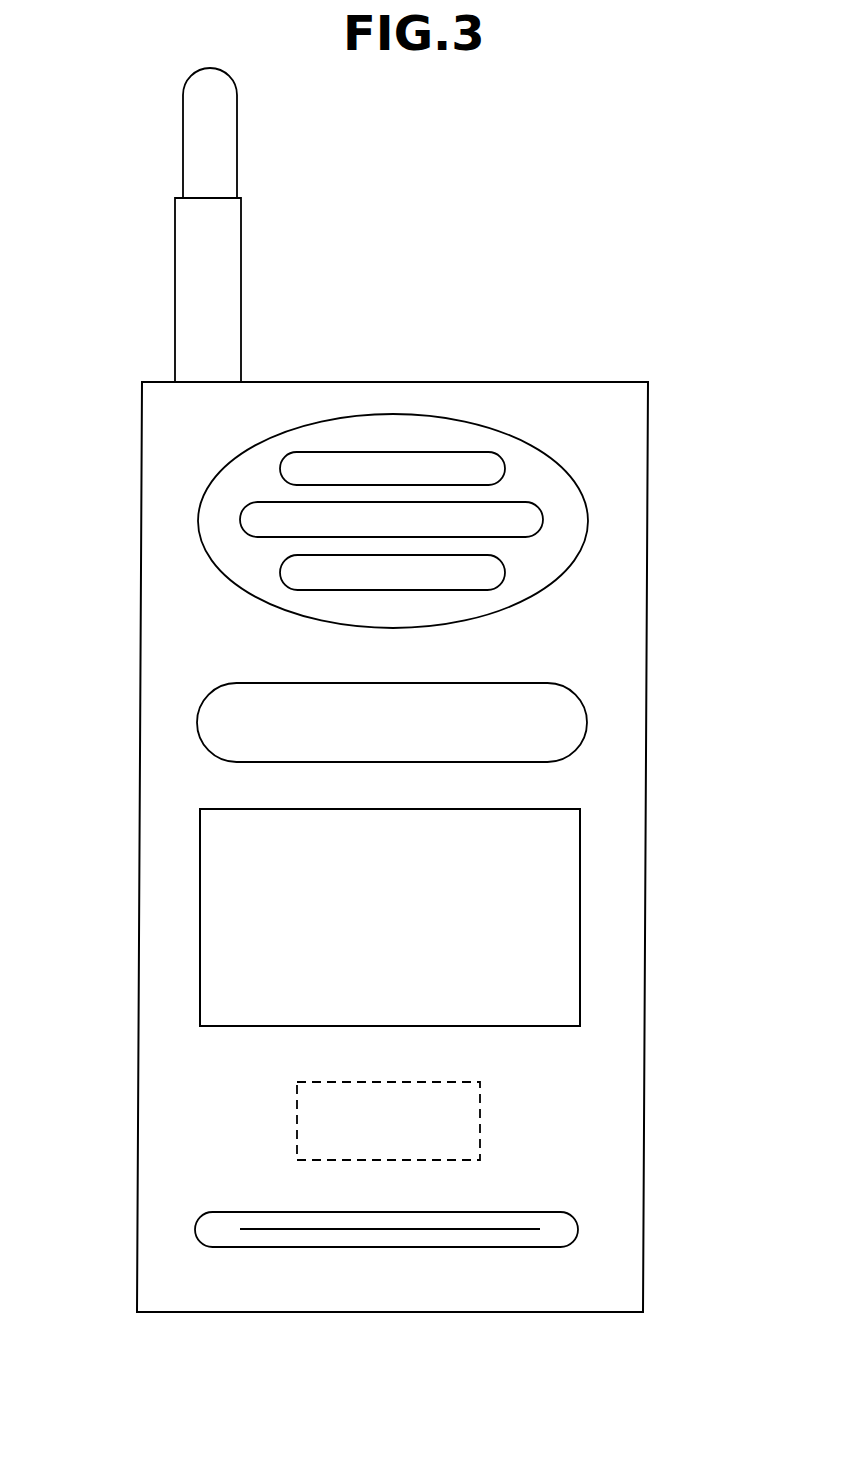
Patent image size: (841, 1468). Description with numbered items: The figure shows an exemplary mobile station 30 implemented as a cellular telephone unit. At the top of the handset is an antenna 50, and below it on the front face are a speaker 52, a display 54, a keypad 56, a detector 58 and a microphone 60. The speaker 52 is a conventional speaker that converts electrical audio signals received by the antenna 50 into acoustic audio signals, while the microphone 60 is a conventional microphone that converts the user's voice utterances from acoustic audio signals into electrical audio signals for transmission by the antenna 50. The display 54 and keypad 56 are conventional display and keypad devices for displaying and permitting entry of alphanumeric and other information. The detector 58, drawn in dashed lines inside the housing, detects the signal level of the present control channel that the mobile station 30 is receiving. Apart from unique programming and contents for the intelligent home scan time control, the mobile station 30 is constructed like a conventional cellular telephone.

The mobile station 30 is at (140, 658).
The antenna 50 is at (229, 281).
The speaker 52 is at (237, 512).
The display 54 is at (557, 728).
The keypad 56 is at (557, 929).
The detector 58 is at (482, 1129).
The microphone 60 is at (562, 1228).